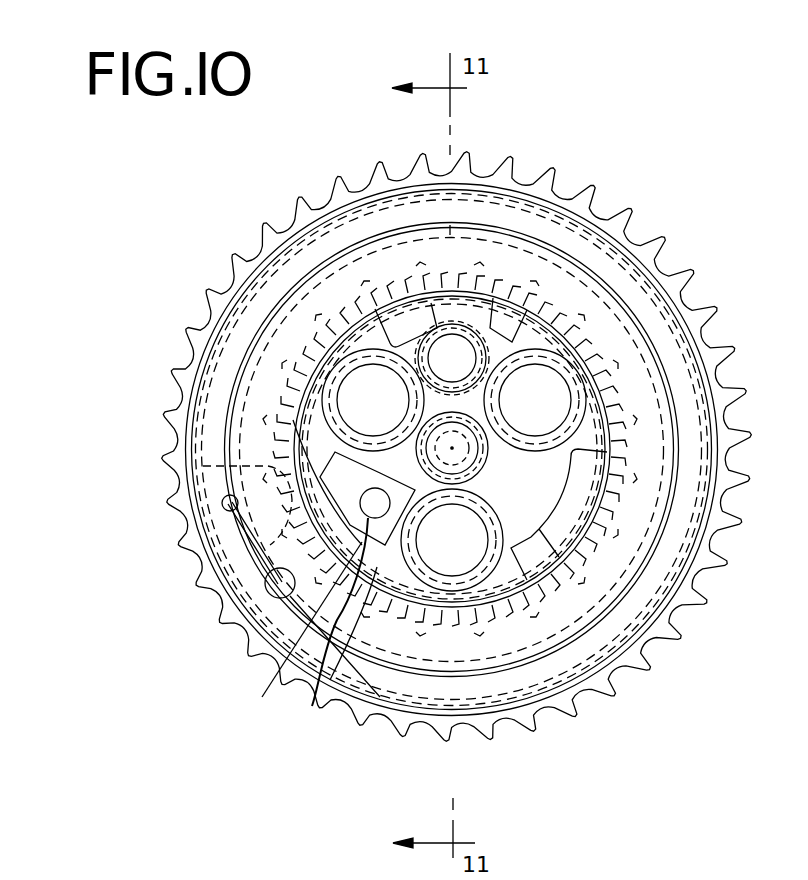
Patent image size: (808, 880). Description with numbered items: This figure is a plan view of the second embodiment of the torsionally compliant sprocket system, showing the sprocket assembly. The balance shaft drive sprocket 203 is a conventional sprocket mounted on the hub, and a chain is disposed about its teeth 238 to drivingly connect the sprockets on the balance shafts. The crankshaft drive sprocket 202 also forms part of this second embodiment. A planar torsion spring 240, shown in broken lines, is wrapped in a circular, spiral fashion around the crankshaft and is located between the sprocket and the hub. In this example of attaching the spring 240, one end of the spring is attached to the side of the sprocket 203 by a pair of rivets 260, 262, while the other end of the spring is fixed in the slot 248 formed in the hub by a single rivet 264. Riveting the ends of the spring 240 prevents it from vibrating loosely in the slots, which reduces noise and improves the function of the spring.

The teeth 238 is at (500, 158).
The balance shaft drive sprocket 203 is at (640, 222).
The planar torsion spring 240 is at (623, 370).
The crankshaft drive sprocket 202 is at (592, 585).
The rivet 260 is at (224, 510).
The rivet 262 is at (250, 632).
The rivet 264 is at (262, 684).
The slot 248 is at (373, 520).